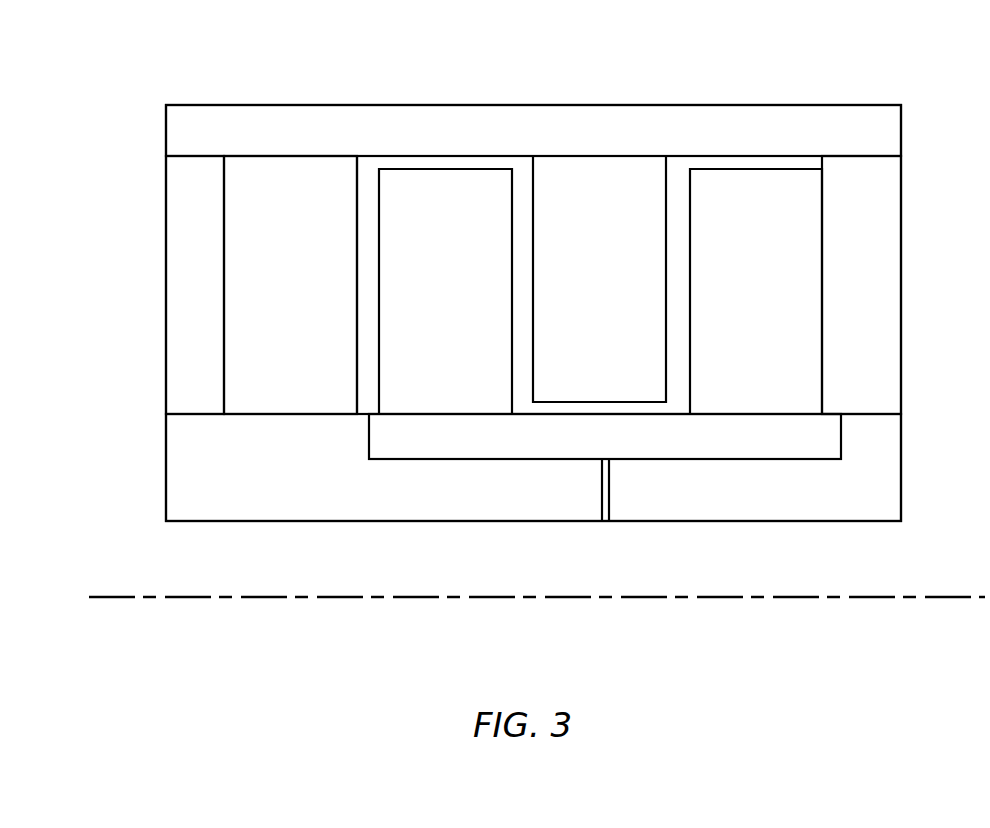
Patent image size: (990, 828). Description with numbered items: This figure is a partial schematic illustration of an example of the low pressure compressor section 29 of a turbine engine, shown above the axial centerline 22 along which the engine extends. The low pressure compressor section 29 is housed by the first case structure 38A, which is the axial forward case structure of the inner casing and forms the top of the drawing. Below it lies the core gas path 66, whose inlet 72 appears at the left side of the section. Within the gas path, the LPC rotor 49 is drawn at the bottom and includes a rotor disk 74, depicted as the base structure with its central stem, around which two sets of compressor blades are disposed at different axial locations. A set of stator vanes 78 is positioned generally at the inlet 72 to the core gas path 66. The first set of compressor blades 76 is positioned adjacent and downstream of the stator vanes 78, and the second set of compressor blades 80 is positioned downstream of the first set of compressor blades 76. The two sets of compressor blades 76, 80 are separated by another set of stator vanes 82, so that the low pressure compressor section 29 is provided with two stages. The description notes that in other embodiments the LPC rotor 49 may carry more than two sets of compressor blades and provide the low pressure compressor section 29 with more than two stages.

The low pressure compressor section 29 is at (641, 89).
The first case structure 38A is at (810, 123).
The LPC rotor 49 is at (573, 487).
The inlet 72 is at (183, 322).
The core gas path 66 is at (871, 303).
The stator vanes 78 is at (306, 303).
The first set of compressor blades 76 is at (459, 308).
The stator vanes 82 is at (616, 300).
The second set of compressor blades 80 is at (769, 305).
The rotor disk 74 is at (606, 487).
The axial centerline 22 is at (922, 598).